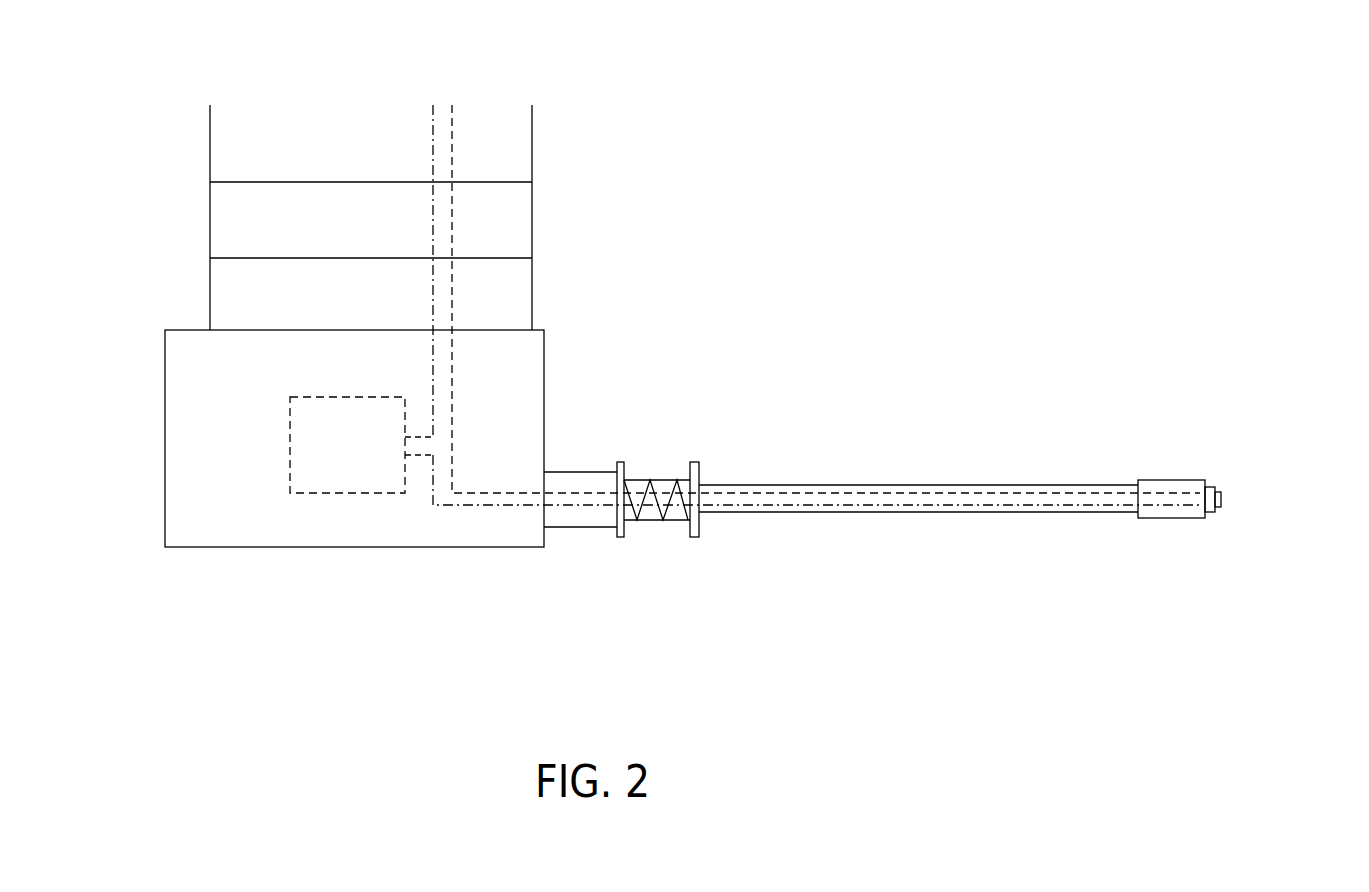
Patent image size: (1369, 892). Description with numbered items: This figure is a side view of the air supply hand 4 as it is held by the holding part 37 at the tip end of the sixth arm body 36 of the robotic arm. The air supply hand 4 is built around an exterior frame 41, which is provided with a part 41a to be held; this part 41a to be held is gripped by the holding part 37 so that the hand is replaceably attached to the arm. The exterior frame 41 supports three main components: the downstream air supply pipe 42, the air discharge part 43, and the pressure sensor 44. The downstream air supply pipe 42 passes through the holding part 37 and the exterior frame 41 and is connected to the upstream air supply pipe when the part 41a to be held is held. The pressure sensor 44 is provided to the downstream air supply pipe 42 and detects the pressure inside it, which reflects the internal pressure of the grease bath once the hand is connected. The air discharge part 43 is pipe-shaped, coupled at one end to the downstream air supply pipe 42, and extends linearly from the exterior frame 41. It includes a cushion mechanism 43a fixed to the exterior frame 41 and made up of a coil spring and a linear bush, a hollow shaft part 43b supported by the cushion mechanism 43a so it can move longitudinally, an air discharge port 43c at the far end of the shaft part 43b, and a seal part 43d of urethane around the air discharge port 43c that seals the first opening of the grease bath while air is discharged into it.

The air supply hand 4 is at (278, 548).
The sixth arm body 36 is at (210, 133).
The holding part 37 is at (210, 213).
The part to be held 41a is at (210, 288).
The exterior frame 41 is at (544, 366).
The pressure sensor 44 is at (290, 456).
The downstream air supply pipe 42 is at (477, 505).
The air discharge part 43 is at (872, 512).
The cushion mechanism 43a is at (628, 522).
The shaft part 43b is at (917, 485).
The air discharge port 43c is at (1222, 500).
The seal part 43d is at (1207, 518).